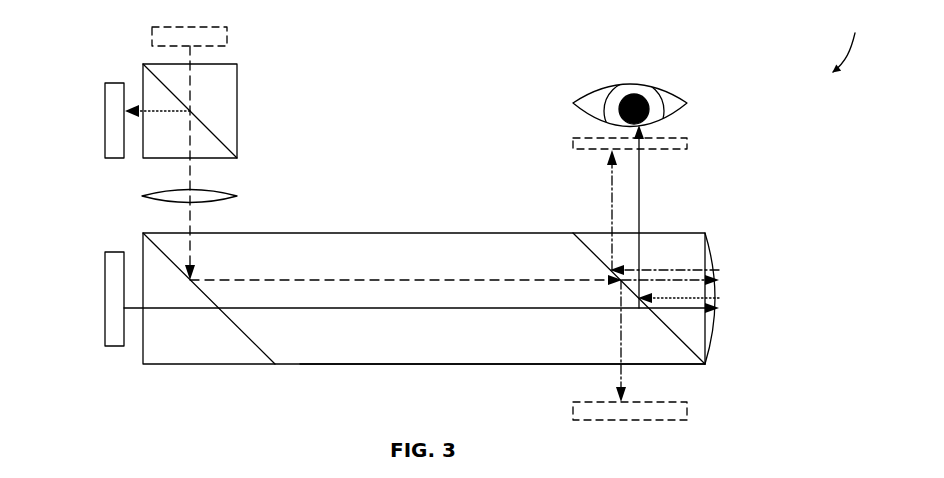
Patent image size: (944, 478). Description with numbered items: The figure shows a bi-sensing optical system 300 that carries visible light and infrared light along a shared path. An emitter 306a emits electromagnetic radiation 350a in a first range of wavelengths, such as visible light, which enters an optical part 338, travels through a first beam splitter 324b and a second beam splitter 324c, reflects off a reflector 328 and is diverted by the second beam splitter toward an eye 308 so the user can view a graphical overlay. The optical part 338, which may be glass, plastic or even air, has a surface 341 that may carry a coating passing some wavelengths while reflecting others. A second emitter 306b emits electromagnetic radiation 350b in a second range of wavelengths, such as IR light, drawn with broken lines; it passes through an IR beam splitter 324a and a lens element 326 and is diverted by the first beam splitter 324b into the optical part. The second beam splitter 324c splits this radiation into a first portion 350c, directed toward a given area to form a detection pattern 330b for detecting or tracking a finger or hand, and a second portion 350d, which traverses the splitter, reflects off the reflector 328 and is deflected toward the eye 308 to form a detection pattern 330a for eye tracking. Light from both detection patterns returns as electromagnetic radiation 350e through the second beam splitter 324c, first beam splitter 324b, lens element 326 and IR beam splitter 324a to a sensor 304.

The bi-sensing optical system 300 is at (852, 40).
The sensor 304 is at (105, 110).
The emitter 306a is at (105, 308).
The emitter 306b is at (227, 38).
The eye 308 is at (687, 103).
The IR beam splitter 324a is at (237, 103).
The first beam splitter 324b is at (230, 324).
The second beam splitter 324c is at (685, 340).
The lens element 326 is at (237, 196).
The reflector 328 is at (720, 265).
The detection pattern 330a is at (687, 143).
The detection pattern 330b is at (687, 410).
The optical part 338 is at (413, 243).
The surface 341 is at (463, 365).
The electromagnetic radiation 350a is at (292, 308).
The electromagnetic radiation 350b is at (190, 216).
The first portion 350c is at (621, 370).
The second portion 350d is at (612, 217).
The electromagnetic radiation 350e is at (153, 110).